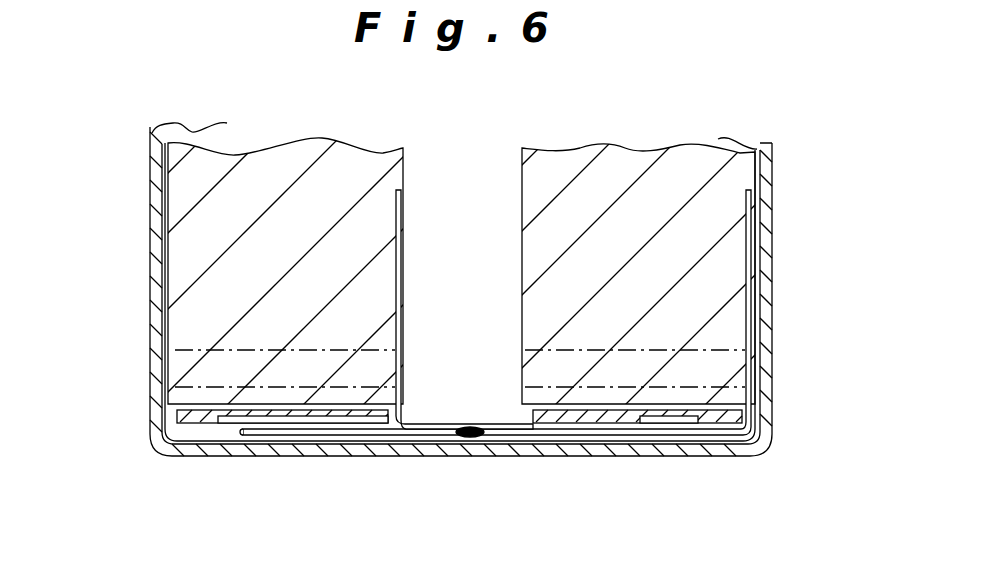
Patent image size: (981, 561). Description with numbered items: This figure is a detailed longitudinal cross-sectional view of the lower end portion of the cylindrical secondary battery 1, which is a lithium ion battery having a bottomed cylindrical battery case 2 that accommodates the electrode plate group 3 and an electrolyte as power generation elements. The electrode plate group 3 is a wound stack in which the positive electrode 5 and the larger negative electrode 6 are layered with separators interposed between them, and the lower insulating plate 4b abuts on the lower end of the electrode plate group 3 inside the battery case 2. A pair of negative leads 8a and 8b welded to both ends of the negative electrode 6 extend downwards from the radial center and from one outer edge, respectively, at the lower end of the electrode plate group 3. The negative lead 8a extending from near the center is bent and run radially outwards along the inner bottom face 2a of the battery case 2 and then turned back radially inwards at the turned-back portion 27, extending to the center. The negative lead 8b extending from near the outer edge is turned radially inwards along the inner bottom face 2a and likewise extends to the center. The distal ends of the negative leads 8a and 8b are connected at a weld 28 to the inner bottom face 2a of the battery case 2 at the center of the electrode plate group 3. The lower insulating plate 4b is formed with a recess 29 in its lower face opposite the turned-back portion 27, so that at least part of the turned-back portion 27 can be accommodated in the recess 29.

The cylindrical secondary battery 1 is at (138, 150).
The battery case 2 is at (160, 270).
The inner bottom face 2a is at (386, 440).
The electrode plate group 3 is at (235, 235).
The lower insulating plate 4b is at (164, 448).
The positive electrode 5 is at (172, 351).
The negative electrode 6 is at (163, 406).
The negative lead 8a is at (414, 437).
The negative lead 8b is at (720, 445).
The turned-back portion 27 is at (241, 438).
The weld 28 is at (476, 440).
The recess 29 is at (222, 424).